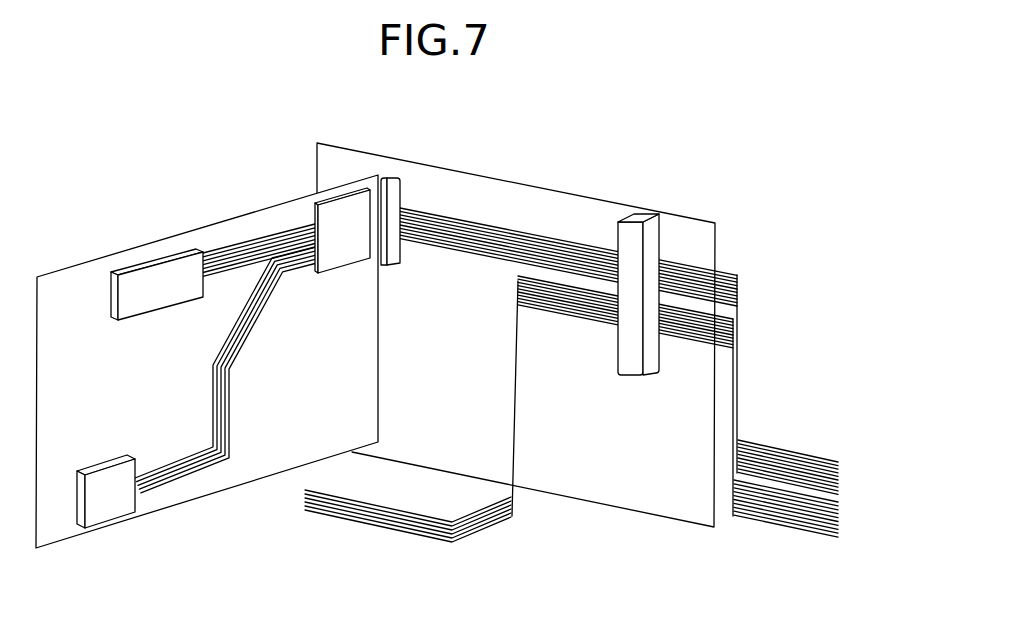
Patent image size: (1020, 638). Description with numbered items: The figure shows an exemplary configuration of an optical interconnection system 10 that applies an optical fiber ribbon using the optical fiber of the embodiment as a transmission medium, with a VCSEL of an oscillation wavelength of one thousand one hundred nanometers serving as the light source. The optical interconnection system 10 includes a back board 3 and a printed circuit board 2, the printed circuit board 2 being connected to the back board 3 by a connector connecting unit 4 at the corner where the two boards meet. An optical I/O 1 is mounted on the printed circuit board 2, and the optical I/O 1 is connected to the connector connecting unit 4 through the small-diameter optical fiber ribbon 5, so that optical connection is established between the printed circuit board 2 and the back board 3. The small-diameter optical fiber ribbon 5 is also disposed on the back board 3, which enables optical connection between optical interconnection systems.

The optical I/O 1 is at (100, 480).
The printed circuit board 2 is at (57, 522).
The back board 3 is at (500, 197).
The connector connecting unit 4 is at (350, 210).
The small-diameter optical fiber ribbon 5 is at (453, 230).
The optical interconnection system 10 is at (633, 136).